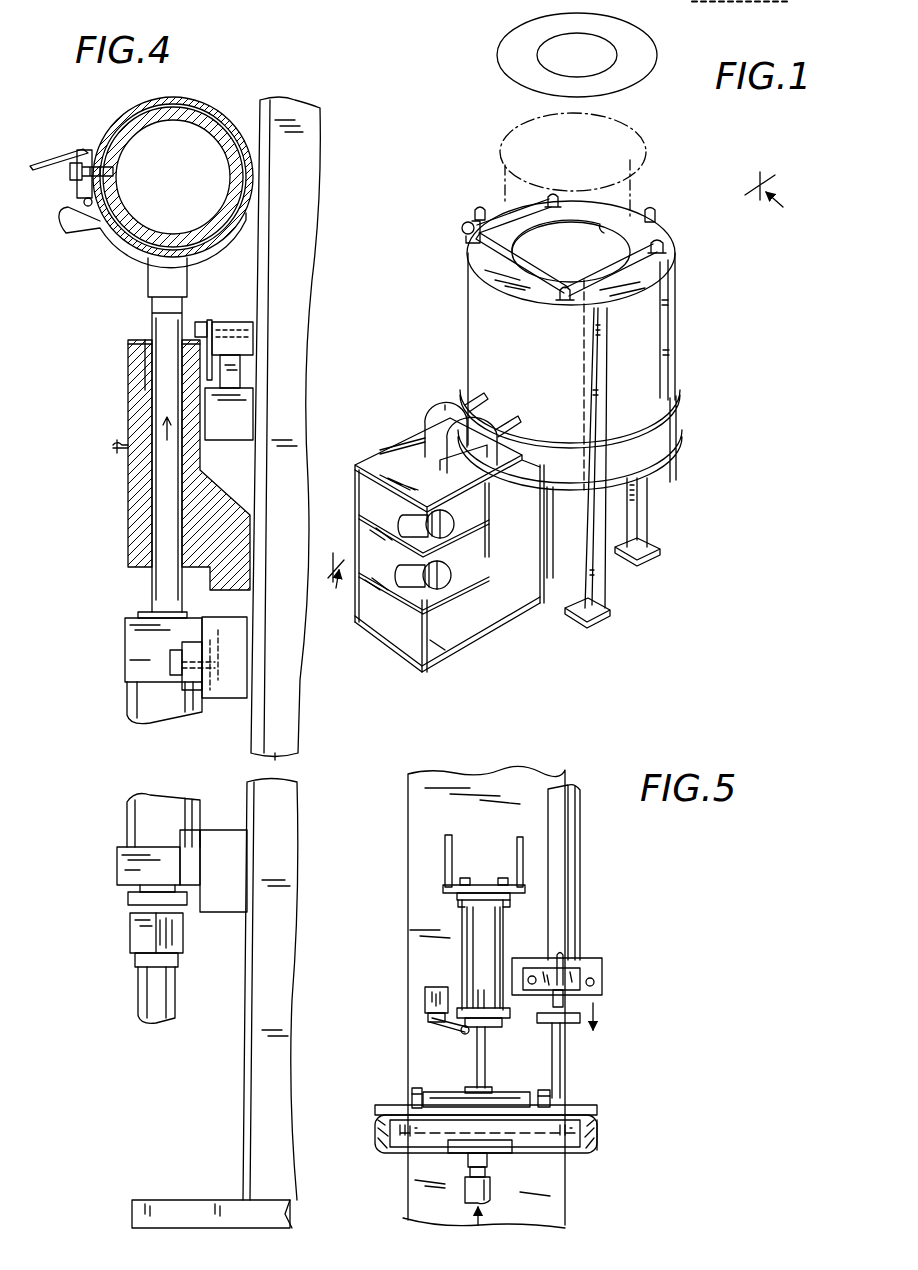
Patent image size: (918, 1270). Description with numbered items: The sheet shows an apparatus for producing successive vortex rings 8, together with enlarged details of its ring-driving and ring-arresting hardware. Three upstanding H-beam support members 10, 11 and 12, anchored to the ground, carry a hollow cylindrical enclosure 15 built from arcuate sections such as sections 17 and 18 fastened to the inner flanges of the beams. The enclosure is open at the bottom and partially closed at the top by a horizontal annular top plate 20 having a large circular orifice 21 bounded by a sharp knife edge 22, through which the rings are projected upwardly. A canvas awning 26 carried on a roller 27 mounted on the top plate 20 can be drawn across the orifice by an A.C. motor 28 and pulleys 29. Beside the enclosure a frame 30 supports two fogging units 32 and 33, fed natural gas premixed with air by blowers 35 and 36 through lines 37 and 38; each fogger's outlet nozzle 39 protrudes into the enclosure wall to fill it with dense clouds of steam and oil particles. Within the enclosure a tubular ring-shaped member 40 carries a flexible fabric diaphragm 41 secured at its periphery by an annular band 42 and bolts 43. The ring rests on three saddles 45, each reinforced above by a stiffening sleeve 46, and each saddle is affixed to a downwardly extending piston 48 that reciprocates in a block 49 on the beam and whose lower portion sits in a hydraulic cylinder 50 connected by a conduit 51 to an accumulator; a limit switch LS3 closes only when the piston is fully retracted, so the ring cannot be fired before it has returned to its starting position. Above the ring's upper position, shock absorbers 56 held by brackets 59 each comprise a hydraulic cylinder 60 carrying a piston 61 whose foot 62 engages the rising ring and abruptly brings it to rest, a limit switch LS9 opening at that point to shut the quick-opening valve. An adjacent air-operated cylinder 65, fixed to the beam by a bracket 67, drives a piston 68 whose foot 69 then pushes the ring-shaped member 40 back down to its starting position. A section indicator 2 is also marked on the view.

In FIG. 1, the section line 2- 2 is at (559, 388).
In FIG. 1, the vortex rings 8 is at (638, 78).
In FIG. 1, the support member 10 is at (645, 503).
In FIG. 4, the support member 11 is at (240, 1115).
In FIG. 1, the support member 11 is at (478, 215).
In FIG. 5, the support member 11 is at (412, 795).
In FIG. 1, the support member 12 is at (596, 573).
In FIG. 1, the hollow cylindrical enclosure 15 is at (686, 312).
In FIG. 1, the arcuate section 17 is at (670, 365).
In FIG. 1, the arcuate section 18 is at (468, 315).
In FIG. 1, the annular top plate 20 is at (663, 273).
In FIG. 1, the circular orifice 21 is at (581, 258).
In FIG. 1, the knife edge 22 is at (600, 230).
In FIG. 1, the canvas awning 26 is at (483, 248).
In FIG. 1, the roller 27 is at (562, 298).
In FIG. 1, the A.C. motor 28 is at (466, 228).
In FIG. 1, the pulleys 29 is at (547, 195).
In FIG. 1, the frame 30 is at (397, 647).
In FIG. 1, the fogging unit 32 is at (440, 412).
In FIG. 1, the fogging unit 33 is at (490, 427).
In FIG. 1, the blower 35 is at (455, 522).
In FIG. 1, the blower 36 is at (450, 576).
In FIG. 1, the line 37 is at (380, 451).
In FIG. 1, the line 38 is at (489, 512).
In FIG. 1, the outlet nozzle 39 is at (475, 405).
In FIG. 4, the ring-shaped member 40 is at (197, 118).
In FIG. 5, the ring-shaped member 40 is at (390, 1148).
In FIG. 4, the flexible piston or diaphragm 41 is at (70, 153).
In FIG. 5, the flexible piston or diaphragm 41 is at (372, 1138).
In FIG. 4, the annular band 42 is at (78, 188).
In FIG. 5, the annular band 42 is at (587, 1133).
In FIG. 4, the bolts 43 is at (70, 176).
In FIG. 4, the saddle 45 is at (70, 224).
In FIG. 4, the stiffening sleeve 46 is at (214, 130).
In FIG. 4, the piston 48 is at (150, 325).
In FIG. 4, the block 49 is at (128, 405).
In FIG. 4, the hydraulic cylinder 50 is at (127, 810).
In FIG. 4, the conduit 51 is at (143, 988).
In FIG. 5, the shock absorber 56 is at (458, 915).
In FIG. 5, the bracket 59 is at (445, 853).
In FIG. 5, the hydraulic cylinder 60 is at (467, 955).
In FIG. 5, the piston 61 is at (477, 1052).
In FIG. 5, the foot 62 is at (467, 1090).
In FIG. 5, the air-operated cylinder 65 is at (578, 826).
In FIG. 5, the bracket 67 is at (604, 972).
In FIG. 5, the piston 68 is at (565, 1003).
In FIG. 5, the foot 69 is at (565, 1033).
In FIG. 4, the limit switch LS3 is at (230, 407).
In FIG. 5, the limit switch LS9 is at (425, 994).